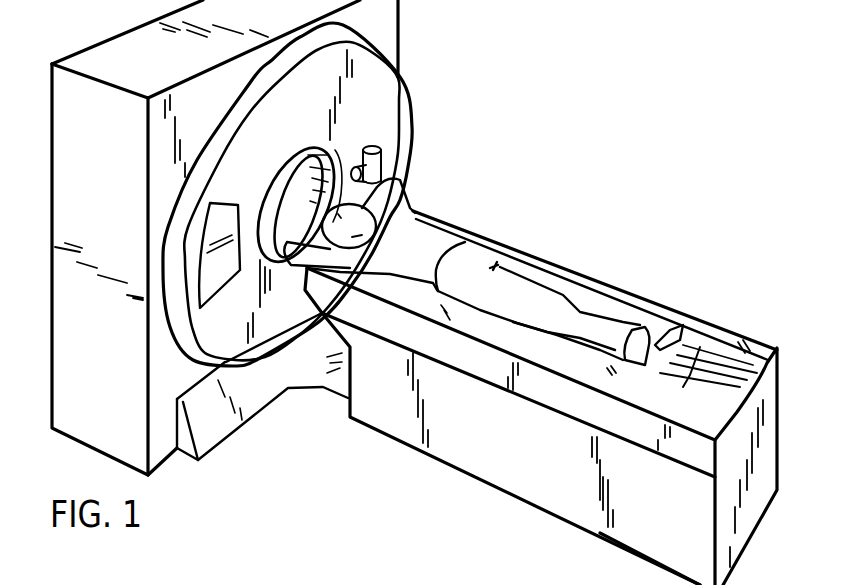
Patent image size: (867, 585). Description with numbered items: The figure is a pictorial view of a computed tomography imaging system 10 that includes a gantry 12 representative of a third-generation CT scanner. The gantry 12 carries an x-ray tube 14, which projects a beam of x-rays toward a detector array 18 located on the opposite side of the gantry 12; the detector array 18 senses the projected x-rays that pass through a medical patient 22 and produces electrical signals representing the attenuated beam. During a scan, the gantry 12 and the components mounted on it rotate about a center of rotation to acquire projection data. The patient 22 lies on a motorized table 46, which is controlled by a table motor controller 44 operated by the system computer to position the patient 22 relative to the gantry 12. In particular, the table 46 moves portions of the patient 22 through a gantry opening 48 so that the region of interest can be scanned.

The computed tomography (CT) imaging system 10 is at (515, 95).
The gantry 12 is at (389, 115).
The x-ray tube 14 is at (383, 163).
The detector array 18 is at (212, 282).
The medical patient 22 is at (438, 238).
The table motor controller 44 is at (528, 559).
The motorized table 46 is at (525, 483).
The gantry opening 48 is at (282, 192).